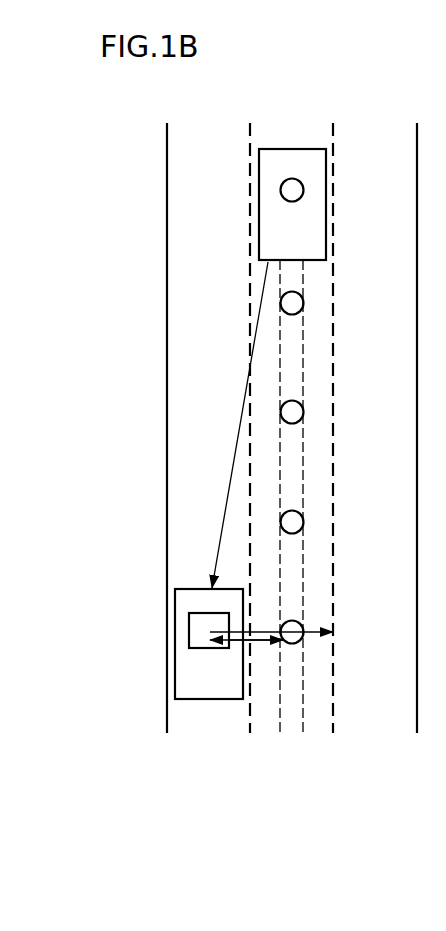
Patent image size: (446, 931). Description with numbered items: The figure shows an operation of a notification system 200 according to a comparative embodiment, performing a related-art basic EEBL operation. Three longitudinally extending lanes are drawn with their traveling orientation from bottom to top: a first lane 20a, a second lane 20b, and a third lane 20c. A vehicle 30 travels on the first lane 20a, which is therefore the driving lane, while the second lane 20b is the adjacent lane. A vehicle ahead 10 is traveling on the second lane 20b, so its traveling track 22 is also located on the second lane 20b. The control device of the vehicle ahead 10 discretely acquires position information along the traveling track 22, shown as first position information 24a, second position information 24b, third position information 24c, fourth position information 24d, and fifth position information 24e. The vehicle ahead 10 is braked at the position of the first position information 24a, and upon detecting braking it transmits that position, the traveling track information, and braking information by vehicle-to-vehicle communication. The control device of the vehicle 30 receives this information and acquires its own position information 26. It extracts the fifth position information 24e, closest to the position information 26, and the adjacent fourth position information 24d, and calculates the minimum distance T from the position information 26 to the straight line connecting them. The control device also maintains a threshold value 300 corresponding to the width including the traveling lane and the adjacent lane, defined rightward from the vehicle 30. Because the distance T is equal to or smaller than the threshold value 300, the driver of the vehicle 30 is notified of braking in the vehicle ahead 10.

The vehicle ahead 10 is at (316, 147).
The first lane 20a is at (182, 133).
The second lane 20b is at (292, 133).
The third lane 20c is at (376, 133).
The traveling track 22 is at (305, 352).
The first position information 24a is at (303, 194).
The second position information 24b is at (302, 297).
The third position information 24c is at (302, 407).
The fourth position information 24d is at (302, 517).
The fifth position information 24e is at (302, 625).
The position information 26 is at (189, 628).
The vehicle 30 is at (175, 684).
The threshold value 300 is at (278, 637).
The distance T is at (265, 642).
The notification system 200 is at (310, 841).